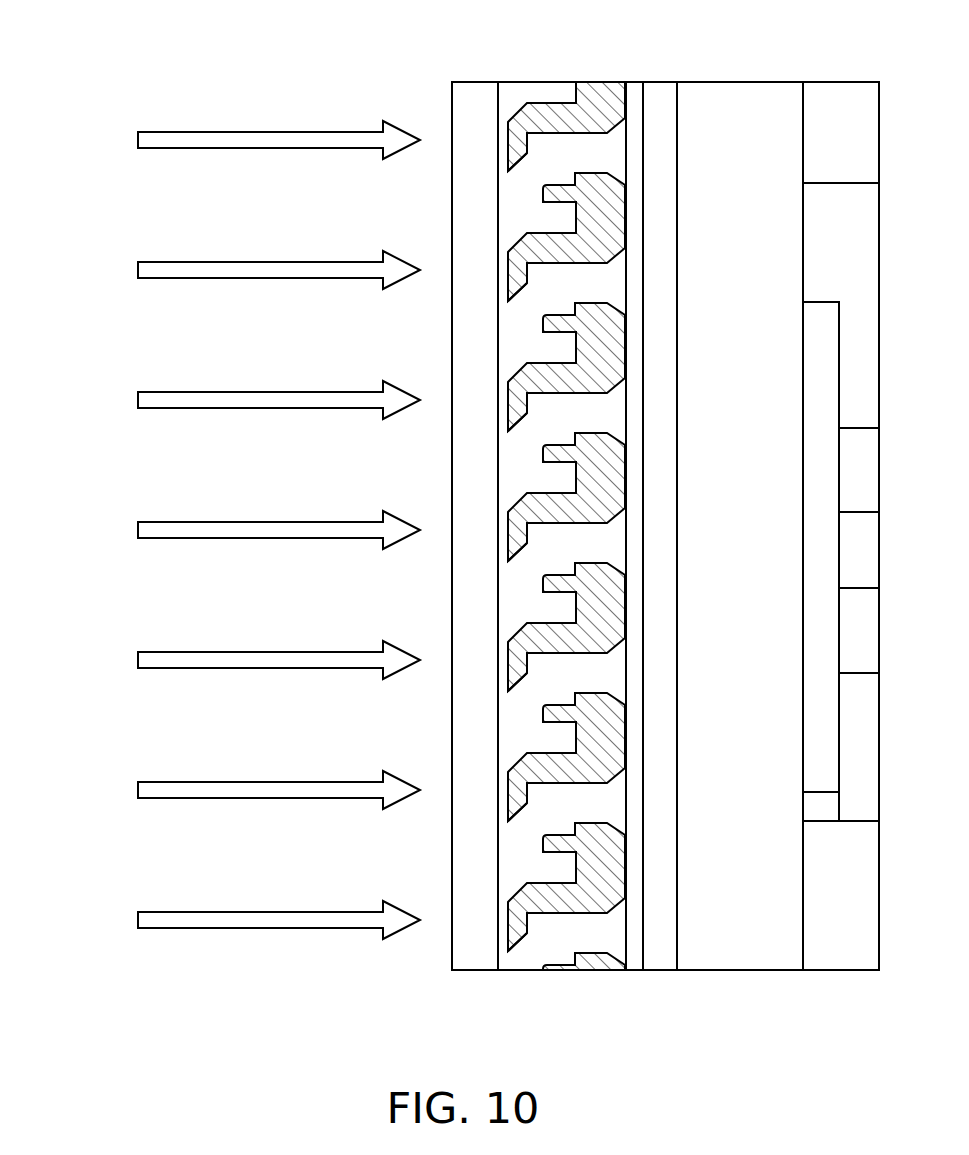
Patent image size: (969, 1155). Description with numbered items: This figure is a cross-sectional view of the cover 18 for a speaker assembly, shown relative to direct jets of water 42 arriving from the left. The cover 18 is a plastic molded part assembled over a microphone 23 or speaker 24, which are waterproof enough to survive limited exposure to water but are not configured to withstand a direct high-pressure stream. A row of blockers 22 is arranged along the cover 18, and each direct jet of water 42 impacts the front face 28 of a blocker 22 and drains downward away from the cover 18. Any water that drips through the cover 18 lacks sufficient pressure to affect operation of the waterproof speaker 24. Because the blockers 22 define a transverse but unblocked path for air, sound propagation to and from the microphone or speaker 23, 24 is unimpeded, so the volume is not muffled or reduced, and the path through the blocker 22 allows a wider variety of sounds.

The cover 18 is at (633, 83).
The blocker 22 is at (527, 104).
The microphone 23 is at (750, 107).
The speaker 24 is at (841, 526).
The front face 28 is at (505, 165).
The direct jet of water 42 is at (92, 75).